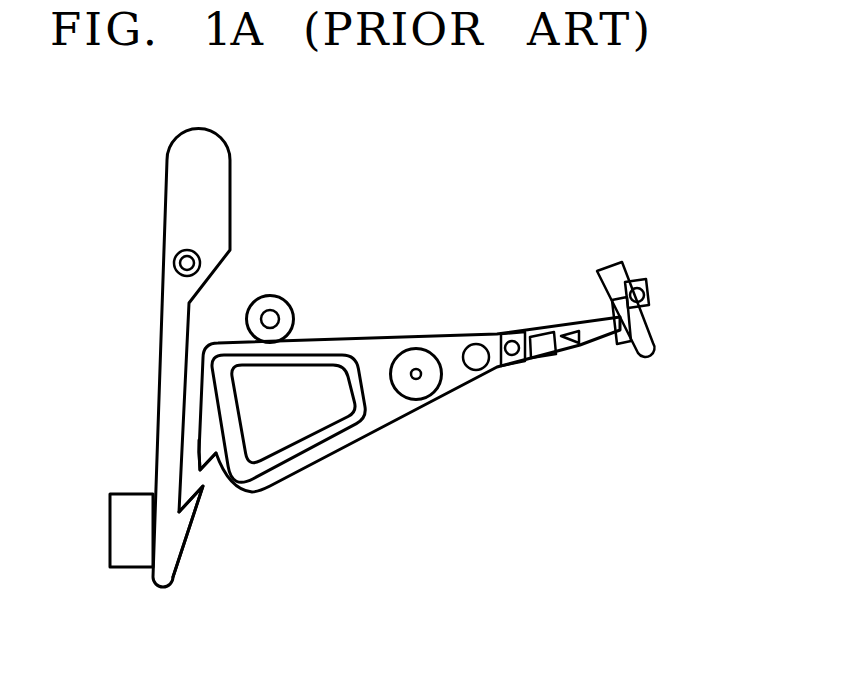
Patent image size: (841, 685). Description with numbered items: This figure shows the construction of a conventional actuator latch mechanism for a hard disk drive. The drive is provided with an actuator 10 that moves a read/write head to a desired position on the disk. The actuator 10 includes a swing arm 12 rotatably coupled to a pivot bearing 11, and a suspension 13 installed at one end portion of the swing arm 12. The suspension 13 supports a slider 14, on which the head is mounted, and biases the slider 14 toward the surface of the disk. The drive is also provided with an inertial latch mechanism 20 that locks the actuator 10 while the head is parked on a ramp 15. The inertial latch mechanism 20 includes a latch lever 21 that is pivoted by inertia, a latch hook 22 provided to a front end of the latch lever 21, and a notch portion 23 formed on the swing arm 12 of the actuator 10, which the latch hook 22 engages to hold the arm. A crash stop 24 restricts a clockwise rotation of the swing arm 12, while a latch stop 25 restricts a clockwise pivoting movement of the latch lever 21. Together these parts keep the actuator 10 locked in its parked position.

The actuator 10 is at (430, 310).
The pivot bearing 11 is at (415, 373).
The swing arm 12 is at (458, 386).
The suspension 13 is at (583, 338).
The slider 14 is at (619, 320).
The ramp 15 is at (650, 327).
The inertial latch mechanism 20 is at (140, 256).
The latch lever 21 is at (168, 328).
The latch hook 22 is at (198, 508).
The notch portion 23 is at (203, 457).
The crash stop 24 is at (276, 297).
The latch stop 25 is at (125, 493).